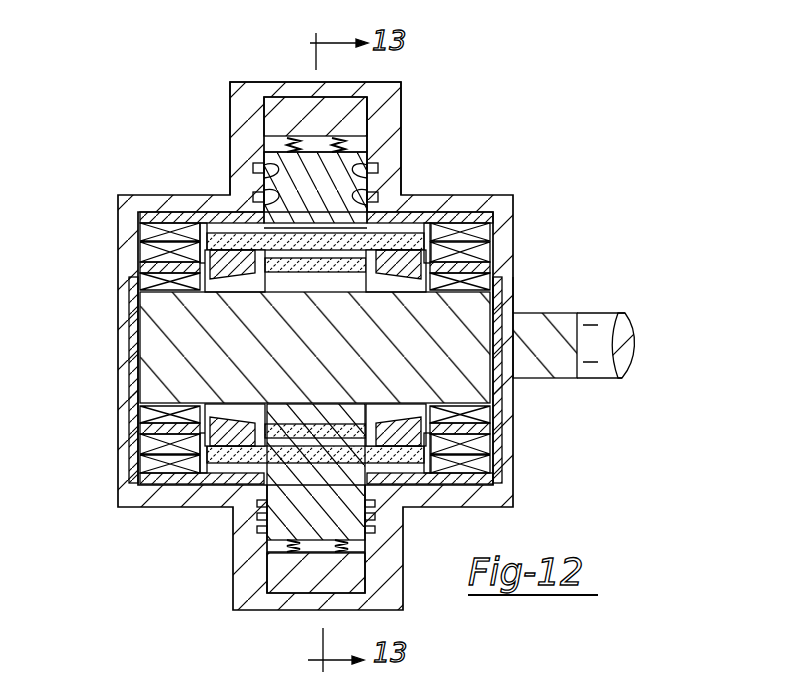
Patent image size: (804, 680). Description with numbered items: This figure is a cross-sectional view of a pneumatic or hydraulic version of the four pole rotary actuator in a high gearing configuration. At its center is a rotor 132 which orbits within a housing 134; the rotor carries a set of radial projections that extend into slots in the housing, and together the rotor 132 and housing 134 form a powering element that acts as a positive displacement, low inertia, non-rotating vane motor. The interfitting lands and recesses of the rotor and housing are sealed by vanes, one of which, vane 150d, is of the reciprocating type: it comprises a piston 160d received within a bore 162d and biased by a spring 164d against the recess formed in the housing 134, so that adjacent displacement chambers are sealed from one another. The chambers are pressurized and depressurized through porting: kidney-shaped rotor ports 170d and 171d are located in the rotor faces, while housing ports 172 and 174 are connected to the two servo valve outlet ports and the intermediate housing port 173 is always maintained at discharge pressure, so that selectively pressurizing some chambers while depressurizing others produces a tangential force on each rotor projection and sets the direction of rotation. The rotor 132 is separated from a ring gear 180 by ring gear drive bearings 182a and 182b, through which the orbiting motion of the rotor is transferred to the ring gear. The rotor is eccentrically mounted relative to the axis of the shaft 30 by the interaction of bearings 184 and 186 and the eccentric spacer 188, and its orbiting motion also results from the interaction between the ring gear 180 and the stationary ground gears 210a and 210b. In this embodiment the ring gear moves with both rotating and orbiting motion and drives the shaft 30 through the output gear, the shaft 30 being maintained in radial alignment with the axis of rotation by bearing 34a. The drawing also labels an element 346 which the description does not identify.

The housing 134 is at (135, 195).
The rotor 132 is at (305, 225).
The shaft 30 is at (612, 332).
The piston 160d is at (345, 112).
The bore 162d is at (265, 120).
The spring 164d is at (276, 143).
The vane 150d is at (363, 128).
The rotor port 170d is at (275, 165).
The rotor port 171d is at (268, 192).
The housing port 172 is at (380, 180).
The intermediate housing port 173 is at (380, 192).
The housing port 174 is at (380, 203).
The ring gear 180 is at (218, 235).
The bearing 184 is at (470, 232).
The eccentric spacer 188 is at (470, 250).
The bearing 186 is at (487, 258).
The coil assembly 346 is at (138, 277).
The bearing 34a is at (495, 289).
The ground gear 210a is at (500, 403).
The ground gear 210b is at (133, 313).
The ring gear drive bearing 182a is at (432, 462).
The ring gear drive bearing 182b is at (222, 465).